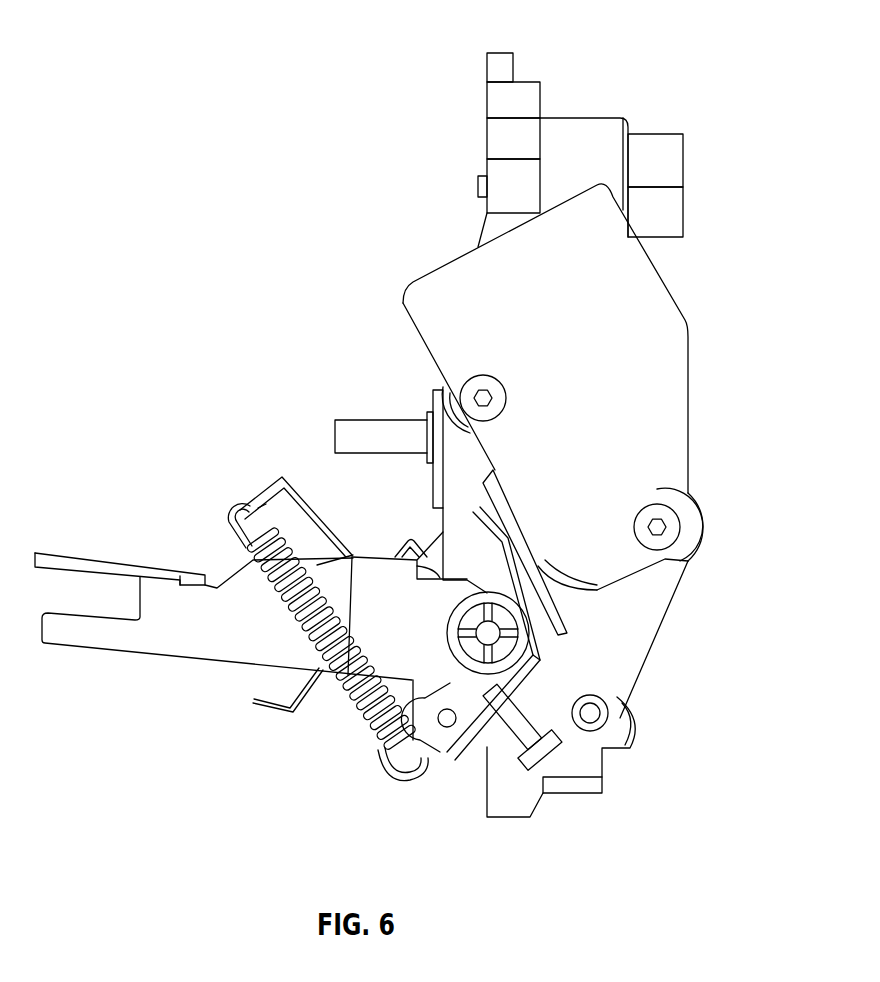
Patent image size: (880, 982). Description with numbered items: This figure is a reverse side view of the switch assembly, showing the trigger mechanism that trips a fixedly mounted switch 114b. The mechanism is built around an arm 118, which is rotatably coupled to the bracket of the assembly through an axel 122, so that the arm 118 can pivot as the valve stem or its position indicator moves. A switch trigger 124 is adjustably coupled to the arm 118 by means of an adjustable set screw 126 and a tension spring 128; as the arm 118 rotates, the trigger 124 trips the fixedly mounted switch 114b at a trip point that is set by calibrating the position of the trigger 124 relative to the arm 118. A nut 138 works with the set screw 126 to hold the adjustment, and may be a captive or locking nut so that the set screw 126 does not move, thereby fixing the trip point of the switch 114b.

The fixedly mounted switch 114b is at (665, 308).
The arm 118 is at (167, 648).
The axel 122 is at (490, 635).
The switch trigger 124 is at (537, 658).
The set screw 126 is at (552, 768).
The tension spring 128 is at (363, 718).
The nut 138 is at (455, 725).